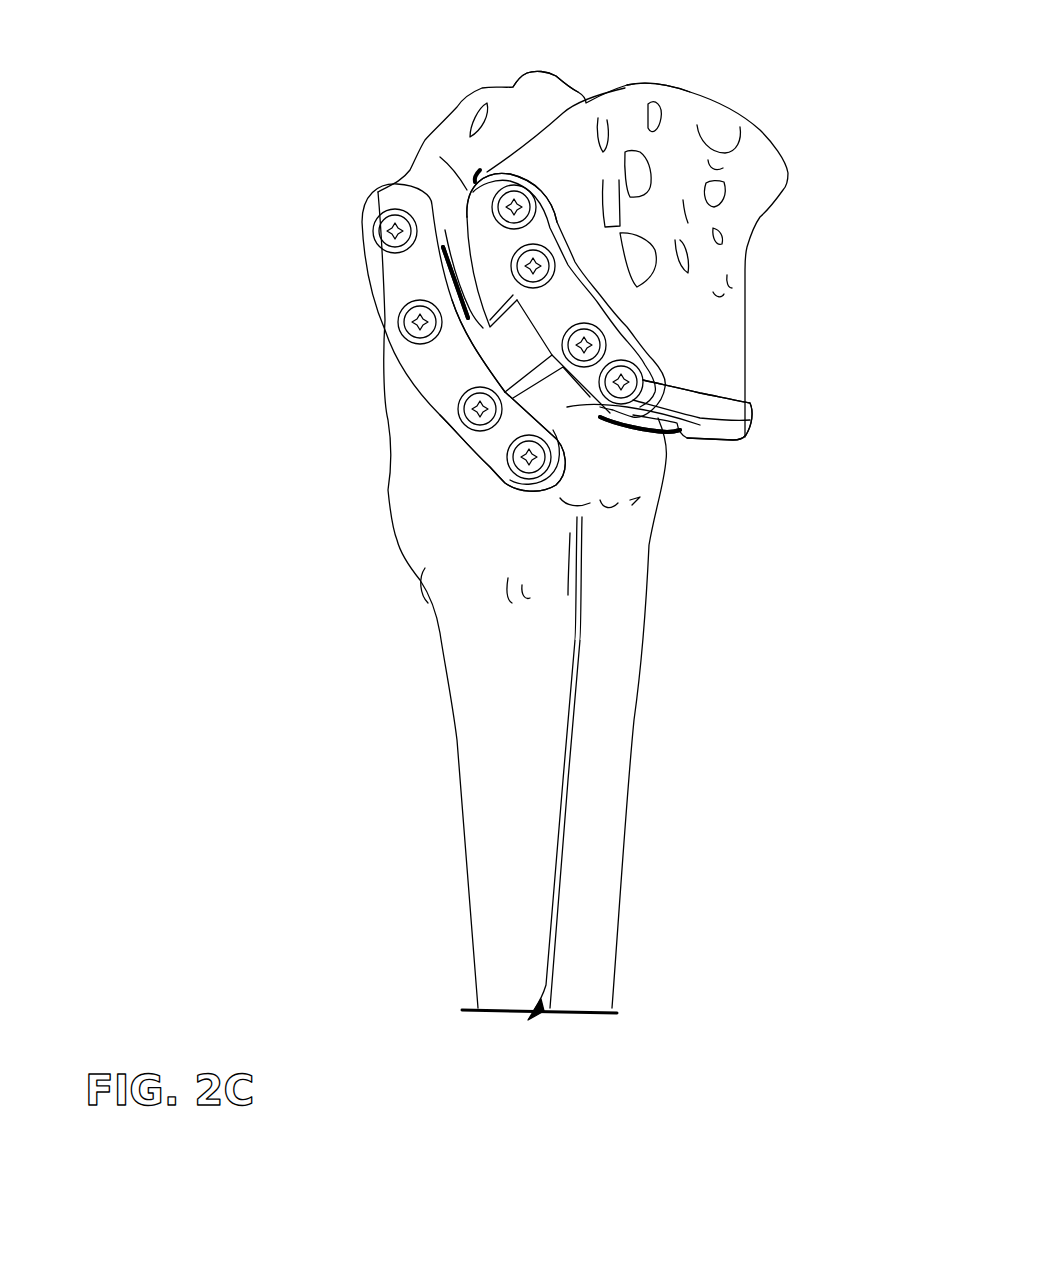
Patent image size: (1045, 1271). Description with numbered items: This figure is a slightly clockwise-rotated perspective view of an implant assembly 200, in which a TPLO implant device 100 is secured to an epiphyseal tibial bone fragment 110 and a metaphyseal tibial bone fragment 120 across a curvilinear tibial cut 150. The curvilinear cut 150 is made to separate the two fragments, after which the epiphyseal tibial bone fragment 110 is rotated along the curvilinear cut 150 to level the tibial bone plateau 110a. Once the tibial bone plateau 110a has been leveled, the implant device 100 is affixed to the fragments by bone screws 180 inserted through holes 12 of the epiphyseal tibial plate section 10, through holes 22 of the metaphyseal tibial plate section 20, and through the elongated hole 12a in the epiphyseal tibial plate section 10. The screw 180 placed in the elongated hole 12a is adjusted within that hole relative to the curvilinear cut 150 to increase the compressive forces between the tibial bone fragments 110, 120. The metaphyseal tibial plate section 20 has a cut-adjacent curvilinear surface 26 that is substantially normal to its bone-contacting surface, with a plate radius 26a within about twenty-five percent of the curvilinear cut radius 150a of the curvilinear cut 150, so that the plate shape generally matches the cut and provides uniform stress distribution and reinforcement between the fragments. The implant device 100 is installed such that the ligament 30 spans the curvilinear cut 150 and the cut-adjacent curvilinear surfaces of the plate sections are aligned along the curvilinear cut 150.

The implant assembly 200 is at (313, 128).
The TPLO implant device 100 is at (358, 262).
The epiphyseal tibial bone fragment 110 is at (743, 167).
The tibial bone plateau 110a is at (502, 90).
The metaphyseal tibial bone fragment 120 is at (567, 672).
The epiphyseal tibial plate section 10 is at (600, 358).
The holes 12 is at (593, 360).
The elongated hole 12a is at (540, 207).
The metaphyseal tibial plate section 20 is at (397, 277).
The holes 22 is at (473, 425).
The cut-adjacent curvilinear surface 26 is at (705, 438).
The plate radius 26a is at (457, 280).
The ligament 30 is at (523, 347).
The curvilinear cut 150 is at (672, 443).
The curvilinear cut radius 150a is at (478, 184).
The bone screws 180 is at (580, 340).